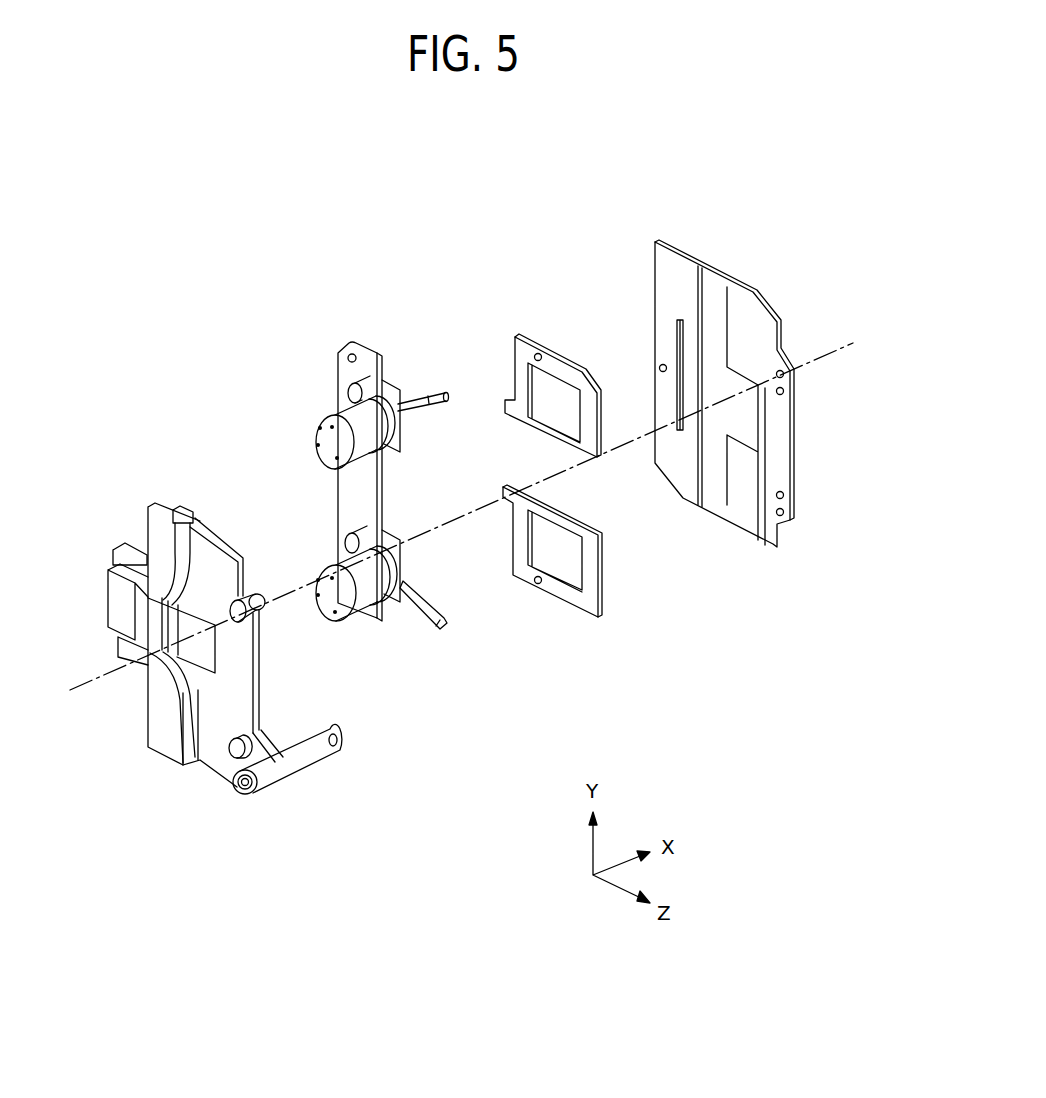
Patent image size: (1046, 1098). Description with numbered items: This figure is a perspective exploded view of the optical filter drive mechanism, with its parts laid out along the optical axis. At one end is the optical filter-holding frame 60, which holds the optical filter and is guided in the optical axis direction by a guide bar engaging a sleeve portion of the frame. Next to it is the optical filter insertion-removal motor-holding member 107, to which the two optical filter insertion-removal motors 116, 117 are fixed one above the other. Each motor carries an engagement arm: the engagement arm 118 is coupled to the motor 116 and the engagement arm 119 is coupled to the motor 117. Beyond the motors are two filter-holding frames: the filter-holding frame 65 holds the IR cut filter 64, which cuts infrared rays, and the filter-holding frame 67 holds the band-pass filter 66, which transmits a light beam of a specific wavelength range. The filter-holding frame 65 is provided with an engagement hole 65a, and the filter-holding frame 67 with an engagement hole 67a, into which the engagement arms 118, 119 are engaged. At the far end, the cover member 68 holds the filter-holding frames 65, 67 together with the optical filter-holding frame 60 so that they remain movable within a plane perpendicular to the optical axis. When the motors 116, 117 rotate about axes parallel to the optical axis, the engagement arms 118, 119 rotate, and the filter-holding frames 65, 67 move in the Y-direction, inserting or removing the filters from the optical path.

The optical filter-holding frame 60 is at (280, 783).
The optical filter insertion-removal motor-holding member 107 is at (340, 505).
The optical filter insertion-removal motor 116 is at (320, 417).
The optical filter insertion-removal motor 117 is at (360, 615).
The engagement arm 118 is at (442, 395).
The engagement arm 119 is at (442, 628).
The IR cut filter 64 is at (547, 397).
The filter-holding frame 65 is at (531, 359).
The engagement hole 65a is at (530, 340).
The band-pass filter 66 is at (565, 548).
The filter-holding frame 67 is at (568, 589).
The engagement hole 67a is at (535, 585).
The cover member 68 is at (740, 532).